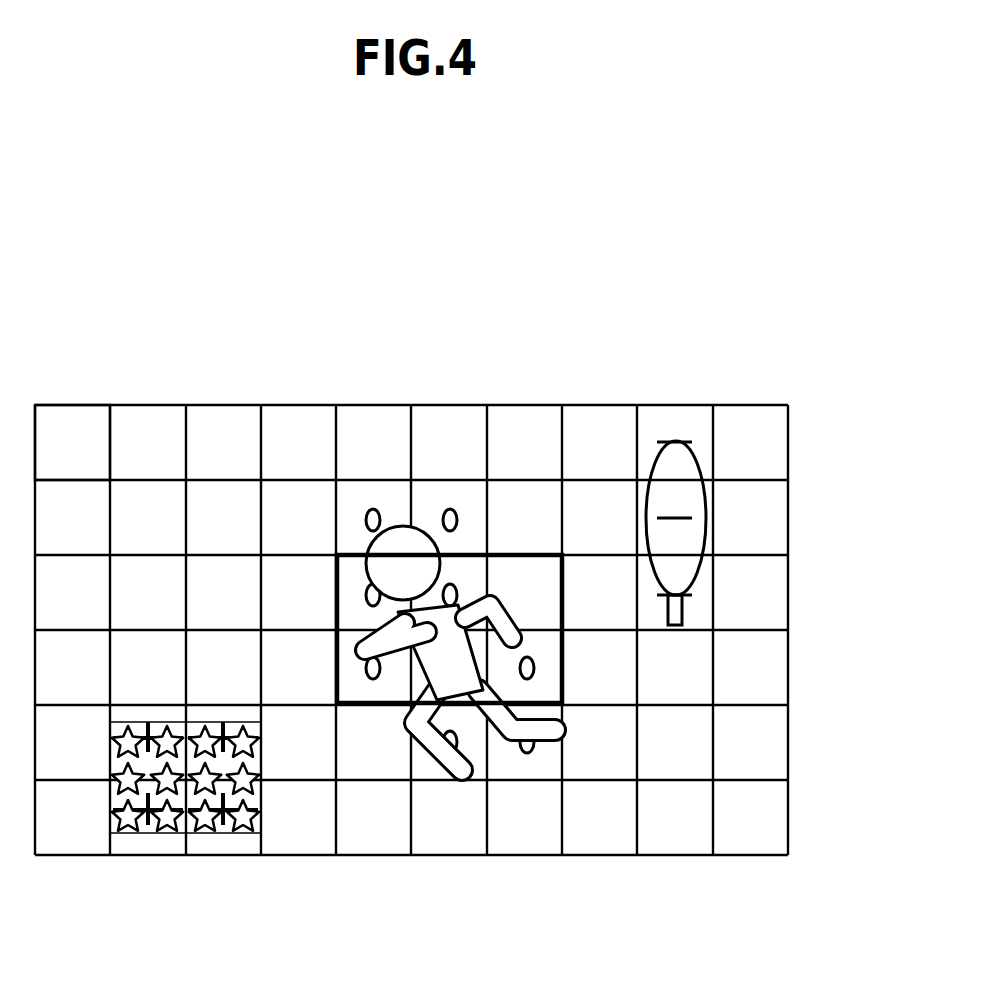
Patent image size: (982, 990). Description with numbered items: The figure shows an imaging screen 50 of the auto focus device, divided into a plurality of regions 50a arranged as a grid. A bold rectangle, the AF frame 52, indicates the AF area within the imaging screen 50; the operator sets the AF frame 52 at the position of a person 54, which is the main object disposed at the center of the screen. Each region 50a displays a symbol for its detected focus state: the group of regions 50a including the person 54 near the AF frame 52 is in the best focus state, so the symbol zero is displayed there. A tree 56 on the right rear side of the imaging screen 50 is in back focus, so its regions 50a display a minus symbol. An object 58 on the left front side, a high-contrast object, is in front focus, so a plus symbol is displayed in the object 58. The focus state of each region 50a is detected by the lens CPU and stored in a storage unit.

The imaging screen 50 is at (372, 278).
The region 50a is at (63, 445).
The AF frame 52 is at (505, 550).
The person 54 is at (528, 609).
The tree 56 is at (701, 463).
The object 58 is at (278, 828).